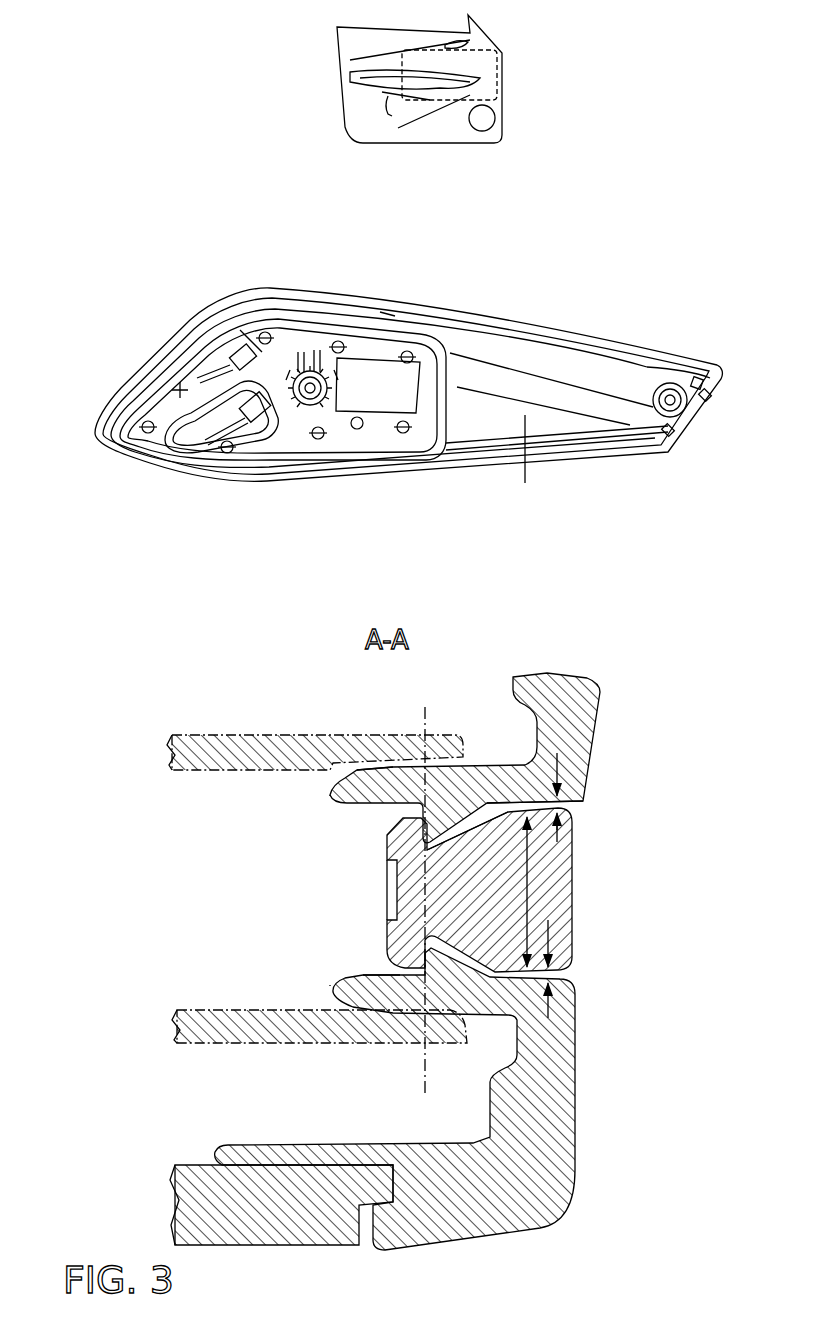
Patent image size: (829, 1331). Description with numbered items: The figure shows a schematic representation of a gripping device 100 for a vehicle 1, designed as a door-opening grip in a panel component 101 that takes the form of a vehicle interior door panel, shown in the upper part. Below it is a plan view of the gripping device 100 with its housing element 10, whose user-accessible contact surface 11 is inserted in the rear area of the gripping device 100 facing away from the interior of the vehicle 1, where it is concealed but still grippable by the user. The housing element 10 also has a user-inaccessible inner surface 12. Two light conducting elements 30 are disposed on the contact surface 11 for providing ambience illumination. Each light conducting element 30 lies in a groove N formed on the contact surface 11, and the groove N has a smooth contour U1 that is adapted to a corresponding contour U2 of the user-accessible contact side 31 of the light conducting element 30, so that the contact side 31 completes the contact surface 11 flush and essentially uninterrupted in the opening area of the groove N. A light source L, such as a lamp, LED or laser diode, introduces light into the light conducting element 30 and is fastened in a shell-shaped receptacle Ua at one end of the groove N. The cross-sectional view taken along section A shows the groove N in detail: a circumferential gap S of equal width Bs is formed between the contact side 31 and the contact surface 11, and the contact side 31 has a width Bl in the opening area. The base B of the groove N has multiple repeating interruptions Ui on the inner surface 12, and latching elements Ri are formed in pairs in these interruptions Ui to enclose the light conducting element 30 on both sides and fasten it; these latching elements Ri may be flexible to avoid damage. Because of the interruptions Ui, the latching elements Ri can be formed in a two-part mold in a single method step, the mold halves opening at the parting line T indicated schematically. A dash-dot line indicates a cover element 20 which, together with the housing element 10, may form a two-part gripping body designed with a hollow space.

The vehicle 1 is at (512, 140).
The gripping device 100 is at (462, 77).
The panel component 101 is at (356, 42).
The housing element 10 is at (490, 351).
The user-accessible contact surface 11 is at (520, 340).
The user-inaccessible inner surface 12 is at (495, 698).
The cover element 20 is at (195, 752).
The light conducting element 30 is at (350, 313).
The contact side 31 is at (584, 957).
The shell-shaped receptacle Ua is at (259, 373).
The smooth contour U1 is at (310, 296).
The corresponding contour U2 is at (295, 311).
The interruptions Ui is at (353, 890).
The groove N is at (391, 309).
The light source L is at (245, 405).
The section line A- A is at (523, 423).
The base B is at (326, 795).
The latching elements Ri is at (362, 792).
The gap S is at (585, 803).
The width of gap Bs is at (559, 843).
The width of contact side Bl is at (530, 918).
The parting line T is at (423, 1087).